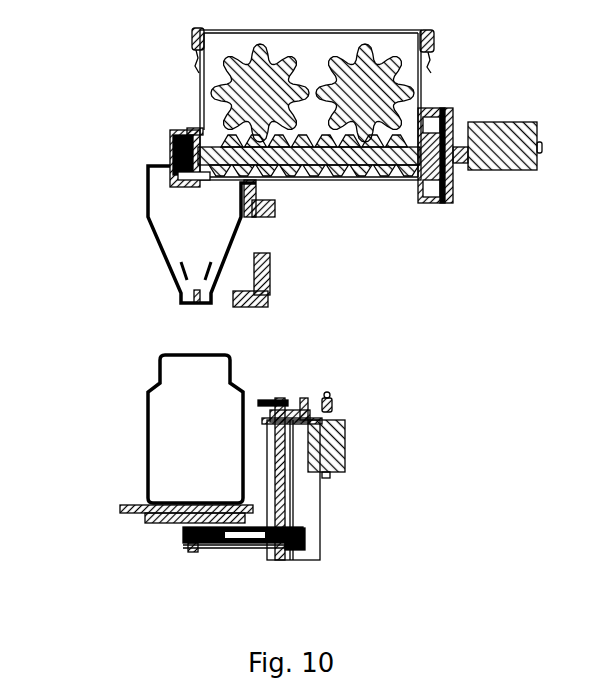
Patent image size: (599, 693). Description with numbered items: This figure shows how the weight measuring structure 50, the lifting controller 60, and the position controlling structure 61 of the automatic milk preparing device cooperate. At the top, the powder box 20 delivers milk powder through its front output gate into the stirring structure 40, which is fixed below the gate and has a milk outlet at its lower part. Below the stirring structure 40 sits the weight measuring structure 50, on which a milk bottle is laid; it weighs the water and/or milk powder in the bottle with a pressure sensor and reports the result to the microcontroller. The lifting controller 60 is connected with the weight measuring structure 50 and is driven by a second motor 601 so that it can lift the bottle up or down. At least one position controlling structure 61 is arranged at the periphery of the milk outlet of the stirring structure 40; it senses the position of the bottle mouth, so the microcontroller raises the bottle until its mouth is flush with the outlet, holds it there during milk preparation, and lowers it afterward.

The powder box 20 is at (200, 58).
The stirring structure 40 is at (175, 215).
The weight measuring structure 50 is at (185, 530).
The lifting controller 60 is at (330, 400).
The second motor 601 is at (345, 458).
The position controlling structure 61 is at (263, 297).